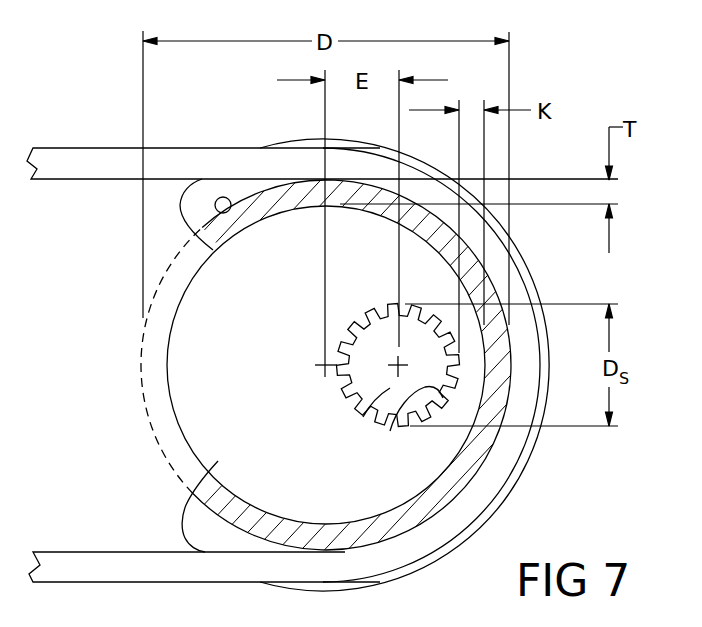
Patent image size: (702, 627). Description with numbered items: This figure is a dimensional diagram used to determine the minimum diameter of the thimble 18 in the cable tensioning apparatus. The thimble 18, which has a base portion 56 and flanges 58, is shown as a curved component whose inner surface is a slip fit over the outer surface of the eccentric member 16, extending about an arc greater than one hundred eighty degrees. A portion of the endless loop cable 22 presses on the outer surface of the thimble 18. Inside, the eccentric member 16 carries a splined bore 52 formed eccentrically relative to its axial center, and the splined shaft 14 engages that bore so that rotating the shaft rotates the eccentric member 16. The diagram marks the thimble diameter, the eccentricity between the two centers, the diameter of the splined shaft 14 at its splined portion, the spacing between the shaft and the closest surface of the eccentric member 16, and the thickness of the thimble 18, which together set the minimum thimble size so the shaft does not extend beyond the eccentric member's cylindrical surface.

The splined shaft 14 is at (370, 416).
The eccentric member 16 is at (207, 471).
The thimble 18 is at (291, 136).
The endless loop cable 22 is at (90, 562).
The splined bore 52 is at (391, 426).
The base portion 56 is at (229, 198).
The flanges 58 is at (507, 480).